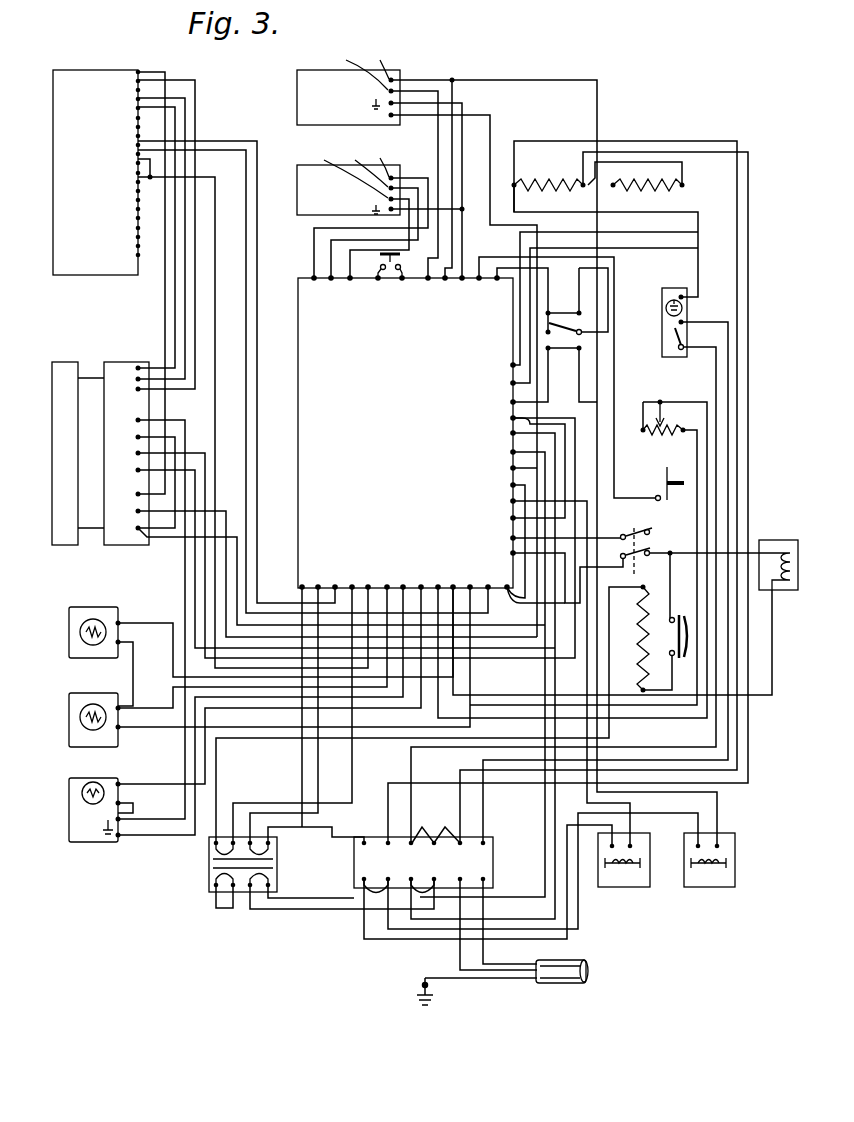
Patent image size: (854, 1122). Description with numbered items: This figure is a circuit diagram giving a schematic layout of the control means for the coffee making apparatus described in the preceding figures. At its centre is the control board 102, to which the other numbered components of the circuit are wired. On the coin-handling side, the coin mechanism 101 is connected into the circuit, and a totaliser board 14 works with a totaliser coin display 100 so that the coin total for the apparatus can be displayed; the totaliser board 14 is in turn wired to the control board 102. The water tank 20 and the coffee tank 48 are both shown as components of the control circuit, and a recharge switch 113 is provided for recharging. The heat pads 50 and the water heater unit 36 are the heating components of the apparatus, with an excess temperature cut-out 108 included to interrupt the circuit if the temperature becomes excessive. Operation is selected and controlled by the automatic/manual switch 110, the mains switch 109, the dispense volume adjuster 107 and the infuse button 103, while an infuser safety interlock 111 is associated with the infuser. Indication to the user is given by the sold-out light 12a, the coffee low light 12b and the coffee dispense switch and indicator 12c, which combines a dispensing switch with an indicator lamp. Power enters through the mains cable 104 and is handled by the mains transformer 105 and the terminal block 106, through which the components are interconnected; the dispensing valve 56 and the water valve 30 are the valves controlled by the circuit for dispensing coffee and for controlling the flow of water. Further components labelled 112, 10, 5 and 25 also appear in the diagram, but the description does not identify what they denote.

The coin mechanism 101 is at (106, 195).
The water tank 20 is at (302, 88).
The coffee tank 48 is at (306, 178).
The recharge switch 113 is at (378, 261).
The control board 102 is at (414, 437).
The heat pads 50 is at (541, 182).
The automatic/manual switch 110 is at (560, 308).
The mains switch 109 is at (663, 296).
The dispense volume adjuster 107 is at (665, 414).
The infuse button 103 is at (653, 494).
The infuser safety interlock 111 is at (655, 526).
The relay coil 112 is at (778, 540).
The water heater unit 36 is at (633, 627).
The excess temperature cut-out 108 is at (687, 660).
The totaliser coin display 100 is at (65, 372).
The totaliser board 14 is at (140, 362).
The signal line 10 is at (136, 379).
The signal line 5 is at (136, 368).
The signal line 25 is at (136, 389).
The sold-out light 12a is at (98, 611).
The coffee low light 12b is at (112, 740).
The coffee dispense switch and indicator 12c is at (87, 829).
The mains transformer 105 is at (209, 862).
The terminal block 106 is at (441, 873).
The dispensing valve 56 is at (627, 884).
The water valve 30 is at (710, 884).
The mains cable 104 is at (565, 975).